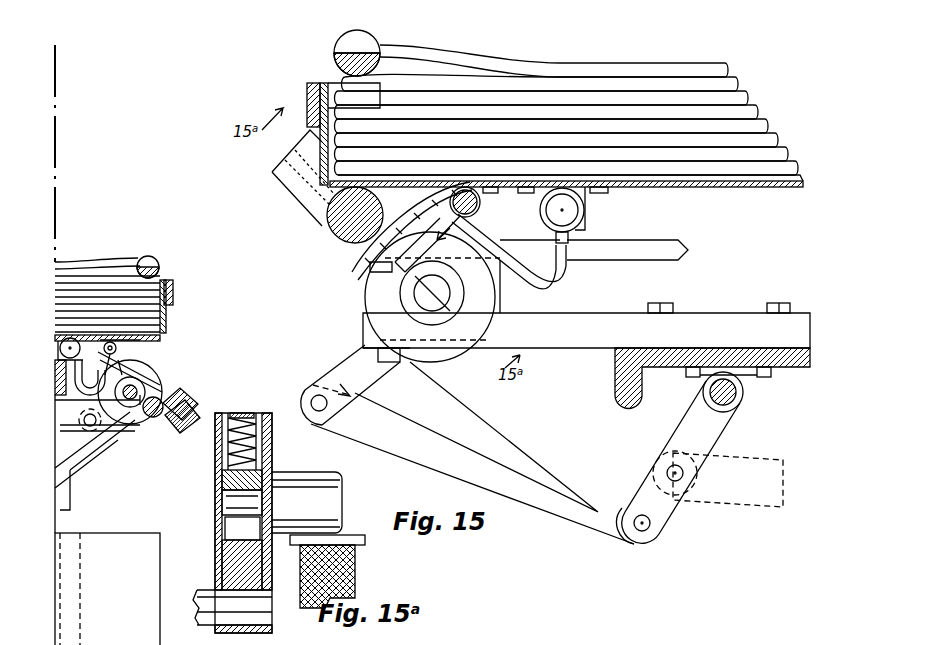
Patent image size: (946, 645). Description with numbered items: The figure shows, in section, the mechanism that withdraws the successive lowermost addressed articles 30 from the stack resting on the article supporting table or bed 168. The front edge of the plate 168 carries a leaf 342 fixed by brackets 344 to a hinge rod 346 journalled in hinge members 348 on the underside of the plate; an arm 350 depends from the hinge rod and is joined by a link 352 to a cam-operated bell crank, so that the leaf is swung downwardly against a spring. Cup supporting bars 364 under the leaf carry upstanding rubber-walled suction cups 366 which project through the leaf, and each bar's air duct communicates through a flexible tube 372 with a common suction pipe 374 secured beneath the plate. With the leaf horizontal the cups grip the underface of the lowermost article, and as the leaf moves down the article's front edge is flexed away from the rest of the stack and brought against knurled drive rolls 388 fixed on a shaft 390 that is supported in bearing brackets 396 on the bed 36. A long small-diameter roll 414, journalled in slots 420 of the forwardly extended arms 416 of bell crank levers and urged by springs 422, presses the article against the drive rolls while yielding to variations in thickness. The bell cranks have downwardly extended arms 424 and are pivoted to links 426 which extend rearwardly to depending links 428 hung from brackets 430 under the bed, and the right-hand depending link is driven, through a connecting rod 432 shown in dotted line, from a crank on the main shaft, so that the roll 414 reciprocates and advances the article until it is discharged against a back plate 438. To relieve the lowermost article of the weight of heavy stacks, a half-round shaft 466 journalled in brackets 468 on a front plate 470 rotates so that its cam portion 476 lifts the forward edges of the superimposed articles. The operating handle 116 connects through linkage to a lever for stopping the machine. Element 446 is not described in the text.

In FIG. 15, the article 30 is at (560, 88).
In FIG. 15A, the article 30 is at (346, 537).
In FIG. 15, the table or bed 36 is at (614, 372).
In FIG. 15, the operating handle 116 is at (118, 433).
In FIG. 15, the article supporting table or bed 168 is at (727, 188).
In FIG. 15, the leaf 342 is at (418, 222).
In FIG. 15, the brackets 344 is at (482, 210).
In FIG. 15, the hinge rod 346 is at (100, 360).
In FIG. 15, the hinge members 348 is at (482, 203).
In FIG. 15, the arm 350 is at (560, 236).
In FIG. 15, the link 352 is at (655, 258).
In FIG. 15, the cup supporting bars 364 is at (395, 280).
In FIG. 15, the suction cups 366 is at (372, 266).
In FIG. 15, the flexible tube 372 is at (548, 282).
In FIG. 15, the suction pipe 374 is at (590, 210).
In FIG. 15, the drive rolls 388 is at (480, 320).
In FIG. 15A, the drive rolls 388 is at (357, 575).
In FIG. 15, the shaft 390 is at (400, 300).
In FIG. 15A, the shaft 390 is at (212, 598).
In FIG. 15, the bearing brackets 396 is at (500, 298).
In FIG. 15, the roll 414 is at (330, 232).
In FIG. 15A, the roll 414 is at (318, 482).
In FIG. 15, the arms 416 is at (290, 200).
In FIG. 15A, the arms 416 is at (215, 525).
In FIG. 15, the slots 420 is at (185, 404).
In FIG. 15A, the slots 420 is at (222, 484).
In FIG. 15, the springs 422 is at (285, 185).
In FIG. 15A, the springs 422 is at (228, 462).
In FIG. 15, the arms 424 is at (355, 346).
In FIG. 15, the links 426 is at (425, 465).
In FIG. 15, the links 428 is at (682, 438).
In FIG. 15, the brackets 430 is at (738, 392).
In FIG. 15, the connecting rod or link 432 is at (765, 455).
In FIG. 15, the back plate 438 is at (107, 589).
In FIG. 15, the member 446 is at (607, 640).
In FIG. 15, the shaft 466 is at (343, 42).
In FIG. 15, the brackets 468 is at (305, 100).
In FIG. 15, the front plate 470 is at (347, 98).
In FIG. 15, the cam portion 476 is at (335, 57).